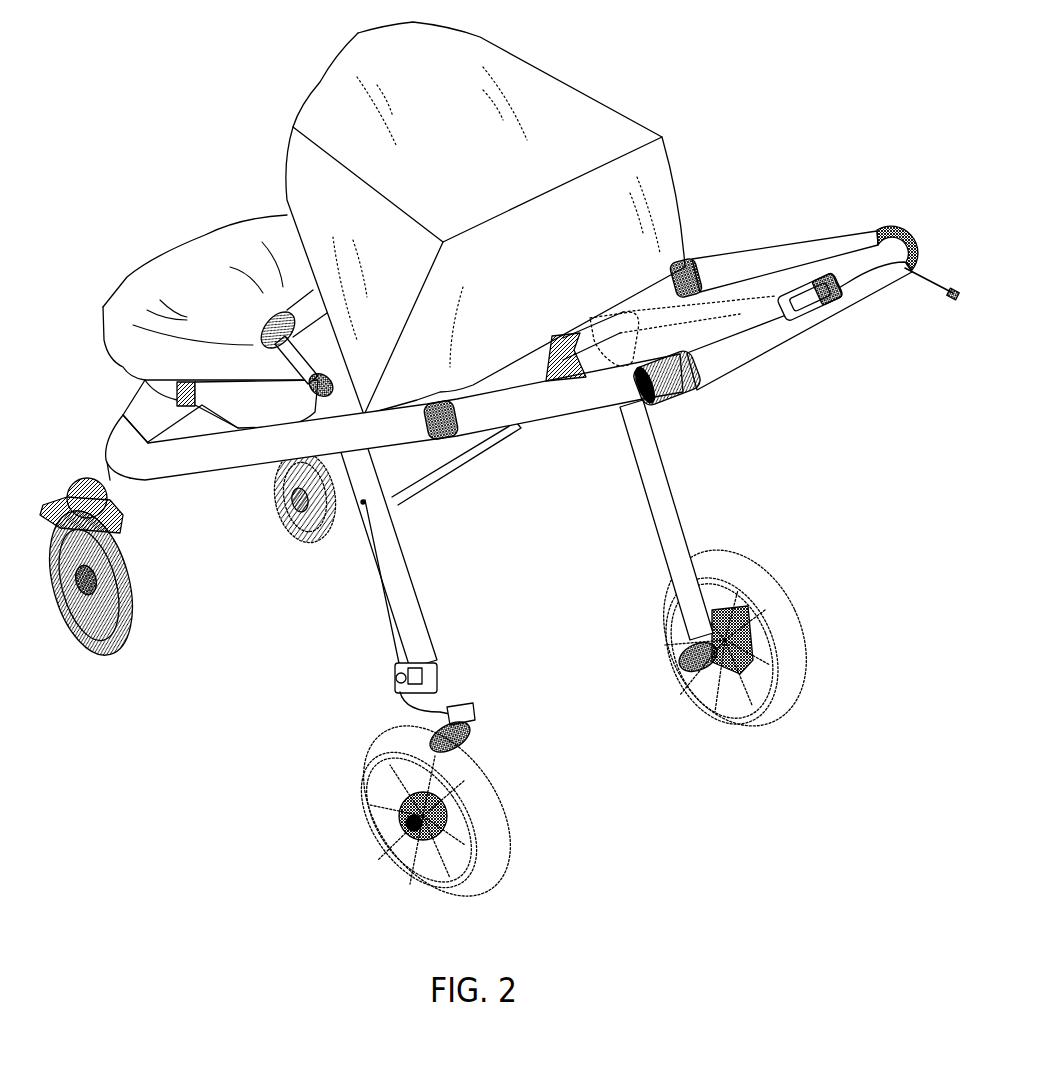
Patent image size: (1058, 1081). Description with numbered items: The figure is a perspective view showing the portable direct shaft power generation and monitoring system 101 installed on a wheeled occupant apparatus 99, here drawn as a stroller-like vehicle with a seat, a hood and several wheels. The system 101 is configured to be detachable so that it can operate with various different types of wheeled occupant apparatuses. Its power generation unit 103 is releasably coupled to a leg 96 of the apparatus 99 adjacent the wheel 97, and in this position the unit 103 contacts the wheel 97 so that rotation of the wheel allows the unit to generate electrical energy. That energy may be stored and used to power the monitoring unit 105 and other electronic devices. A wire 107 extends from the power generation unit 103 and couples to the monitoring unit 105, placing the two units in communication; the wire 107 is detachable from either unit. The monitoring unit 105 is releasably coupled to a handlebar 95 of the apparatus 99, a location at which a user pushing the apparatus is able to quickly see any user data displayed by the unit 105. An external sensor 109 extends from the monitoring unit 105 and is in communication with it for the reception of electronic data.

The handlebar 95 is at (745, 353).
The leg 96 is at (403, 582).
The wheel 97 is at (365, 793).
The wheeled occupant apparatus 99 is at (287, 517).
The portable direct shaft power generation and monitoring system 101 is at (780, 247).
The power generation unit 103 is at (372, 687).
The monitoring unit 105 is at (828, 318).
The wire 107 is at (412, 424).
The external sensor 109 is at (950, 302).